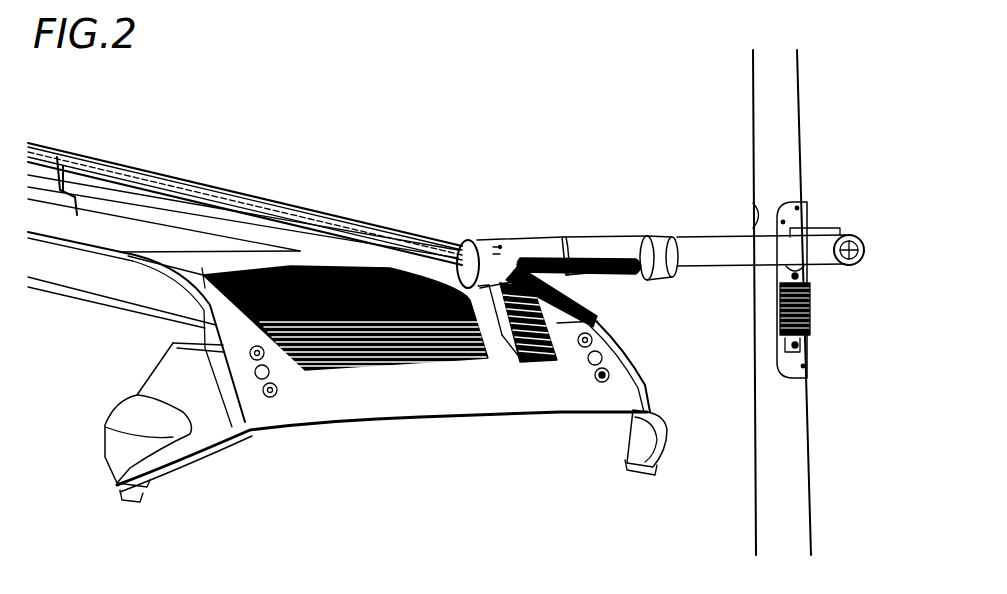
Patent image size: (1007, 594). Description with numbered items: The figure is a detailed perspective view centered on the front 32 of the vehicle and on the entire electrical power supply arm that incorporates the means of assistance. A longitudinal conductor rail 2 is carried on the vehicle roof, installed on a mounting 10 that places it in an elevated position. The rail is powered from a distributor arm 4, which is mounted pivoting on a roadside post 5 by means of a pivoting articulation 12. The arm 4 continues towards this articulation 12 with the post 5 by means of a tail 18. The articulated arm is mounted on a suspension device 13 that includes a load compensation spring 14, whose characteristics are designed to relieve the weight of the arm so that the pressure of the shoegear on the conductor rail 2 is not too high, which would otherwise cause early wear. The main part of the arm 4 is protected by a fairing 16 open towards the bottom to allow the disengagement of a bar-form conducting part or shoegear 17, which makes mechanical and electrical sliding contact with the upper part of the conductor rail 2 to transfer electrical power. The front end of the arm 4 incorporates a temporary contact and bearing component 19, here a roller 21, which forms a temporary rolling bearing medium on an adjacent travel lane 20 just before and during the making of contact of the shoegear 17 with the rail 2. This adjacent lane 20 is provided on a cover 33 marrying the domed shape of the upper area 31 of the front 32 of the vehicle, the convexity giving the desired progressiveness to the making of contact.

The conductor rail 2 is at (233, 190).
The distributor arm 4 is at (613, 180).
The post 5 is at (732, 520).
The mounting 10 is at (598, 320).
The pivoting articulation 12 is at (850, 232).
The suspension device 13 is at (766, 313).
The load compensation spring 14 is at (812, 306).
The fairing 16 is at (577, 238).
The shoegear 17 is at (643, 238).
The tail 18 is at (730, 243).
The temporary contact and bearing component 19 is at (524, 376).
The adjacent travel lane 20 is at (453, 285).
The roller 21 is at (508, 287).
The upper area 31 is at (82, 462).
The front 32 is at (394, 446).
The cover 33 is at (330, 283).